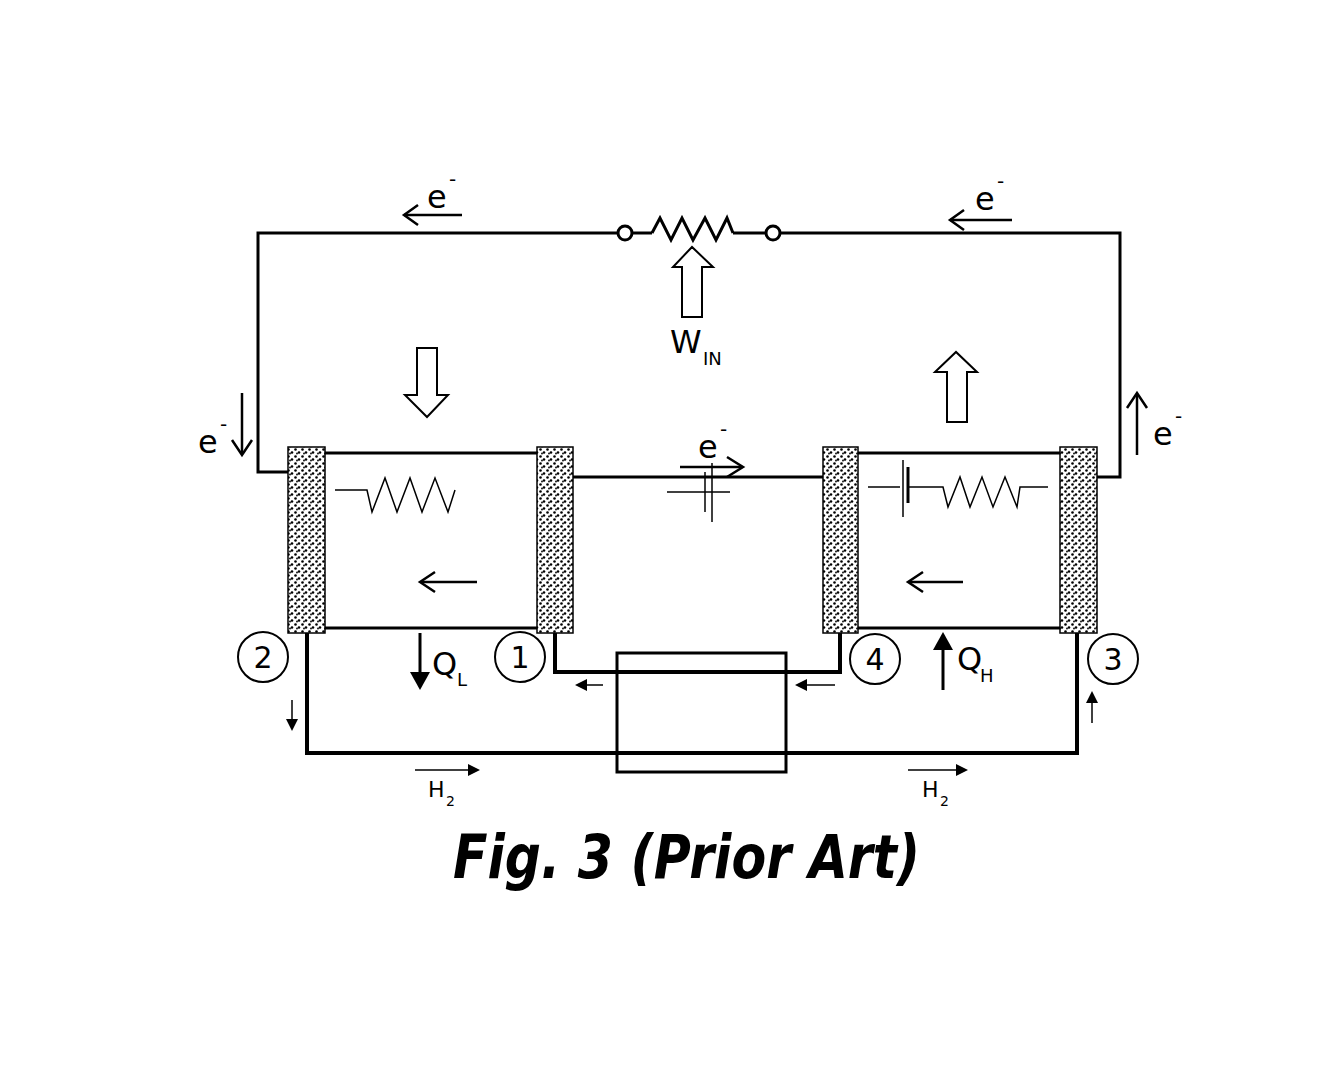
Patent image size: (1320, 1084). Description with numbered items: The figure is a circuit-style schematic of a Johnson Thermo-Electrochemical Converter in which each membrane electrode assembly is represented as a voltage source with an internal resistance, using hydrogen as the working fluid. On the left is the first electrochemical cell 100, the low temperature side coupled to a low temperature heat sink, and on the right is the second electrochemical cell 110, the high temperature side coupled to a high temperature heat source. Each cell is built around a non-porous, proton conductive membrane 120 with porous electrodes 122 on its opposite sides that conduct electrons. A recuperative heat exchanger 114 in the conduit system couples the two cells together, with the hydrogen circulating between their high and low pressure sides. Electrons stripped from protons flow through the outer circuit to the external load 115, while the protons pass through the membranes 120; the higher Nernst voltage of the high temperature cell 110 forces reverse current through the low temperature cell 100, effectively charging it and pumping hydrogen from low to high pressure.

The first electrochemical cell 100 is at (364, 430).
The second electrochemical cell 110 is at (1024, 418).
The heat exchanger 114 is at (693, 653).
The external load 115 is at (682, 221).
The non-porous membrane 120 is at (694, 603).
The porous electrodes 122 is at (557, 448).